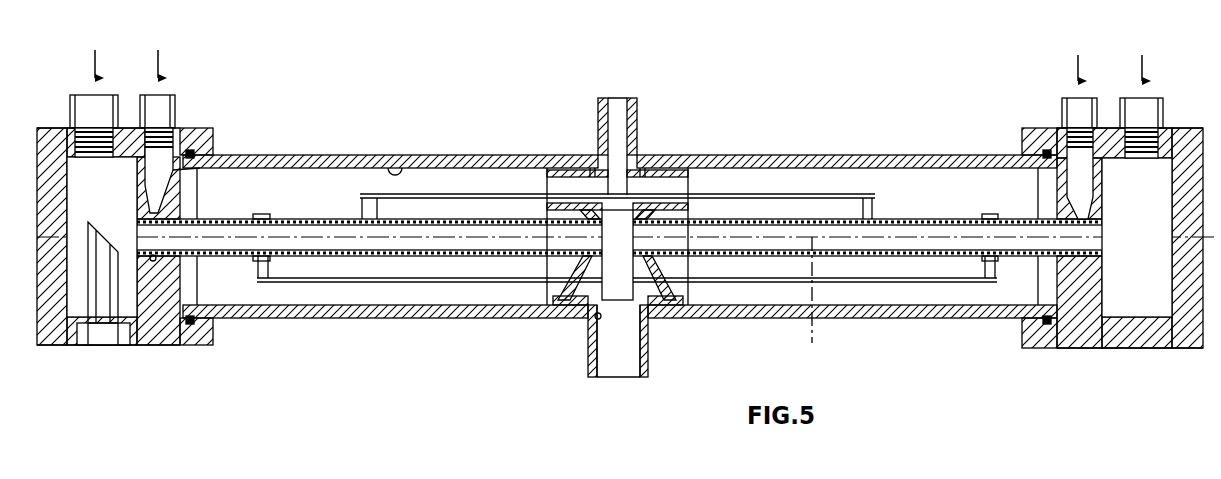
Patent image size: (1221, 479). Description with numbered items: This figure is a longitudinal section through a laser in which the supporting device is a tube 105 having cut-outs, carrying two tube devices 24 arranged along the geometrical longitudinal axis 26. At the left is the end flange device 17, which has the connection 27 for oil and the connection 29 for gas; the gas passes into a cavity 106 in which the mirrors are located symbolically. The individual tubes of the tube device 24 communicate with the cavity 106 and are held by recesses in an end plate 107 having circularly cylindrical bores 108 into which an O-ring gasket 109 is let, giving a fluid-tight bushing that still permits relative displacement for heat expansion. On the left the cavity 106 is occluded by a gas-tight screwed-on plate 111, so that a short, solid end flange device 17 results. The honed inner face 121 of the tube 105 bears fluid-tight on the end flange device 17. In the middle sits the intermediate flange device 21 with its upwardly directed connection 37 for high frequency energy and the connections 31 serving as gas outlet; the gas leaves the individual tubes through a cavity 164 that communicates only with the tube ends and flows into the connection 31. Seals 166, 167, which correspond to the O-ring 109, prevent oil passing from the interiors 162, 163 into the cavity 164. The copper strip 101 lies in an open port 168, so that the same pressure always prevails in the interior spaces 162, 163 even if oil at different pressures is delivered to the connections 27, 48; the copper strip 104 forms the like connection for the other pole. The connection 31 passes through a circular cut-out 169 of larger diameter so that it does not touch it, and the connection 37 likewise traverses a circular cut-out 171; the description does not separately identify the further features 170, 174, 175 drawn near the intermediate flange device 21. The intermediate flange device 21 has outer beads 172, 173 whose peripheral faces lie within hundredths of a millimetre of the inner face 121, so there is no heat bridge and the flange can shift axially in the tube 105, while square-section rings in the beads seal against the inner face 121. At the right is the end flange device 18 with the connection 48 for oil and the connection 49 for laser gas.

The left-hand end flange device 17 is at (64, 360).
The right-hand end flange device 18 is at (1106, 365).
The intermediate flange device 21 is at (654, 84).
The tube device 24 is at (343, 295).
The geometrical longitudinal axis 26 is at (820, 303).
The connection 27 is at (157, 113).
The connection 29 is at (84, 105).
The connection 31 is at (650, 360).
The connection 37 is at (640, 115).
The connection 48 is at (1070, 112).
The connection 49 is at (1155, 112).
The copper strip 101 is at (425, 196).
The copper strip 104 is at (425, 290).
The tube 105 is at (346, 158).
The cavity 106 is at (123, 202).
The end plate 107 is at (156, 259).
The bores 108 is at (152, 213).
The O-ring gasket 109 is at (198, 152).
The plate 111 is at (52, 128).
The inner face 121 is at (395, 168).
The interior 162 is at (302, 202).
The interior 163 is at (945, 202).
The cavity 164 is at (618, 268).
The seal 166 is at (577, 198).
The seal 167 is at (665, 200).
The open port 168 is at (565, 166).
The circular cut-out 169 is at (596, 320).
The passage 170 is at (660, 165).
The circular cut-out 171 is at (590, 160).
The outer bead 172 is at (548, 300).
The outer bead 173 is at (700, 303).
The passage 174 is at (560, 312).
The passage 175 is at (680, 305).